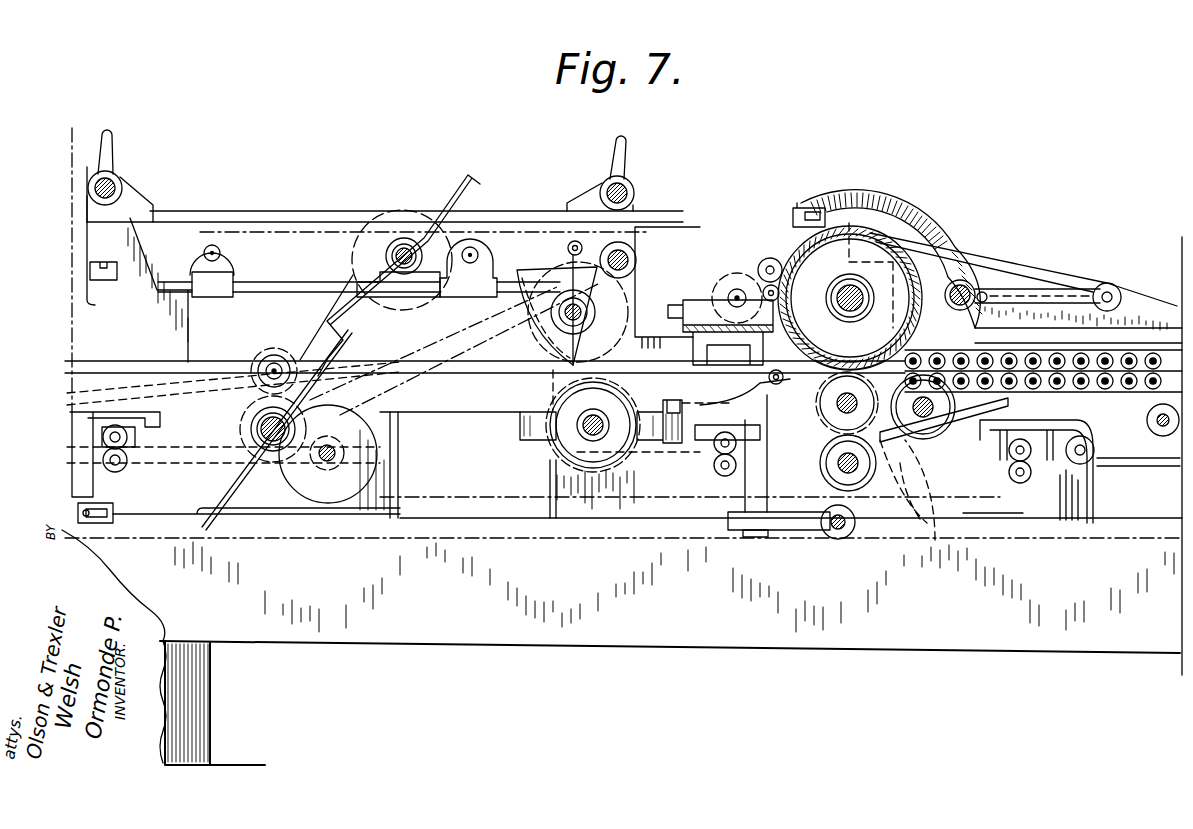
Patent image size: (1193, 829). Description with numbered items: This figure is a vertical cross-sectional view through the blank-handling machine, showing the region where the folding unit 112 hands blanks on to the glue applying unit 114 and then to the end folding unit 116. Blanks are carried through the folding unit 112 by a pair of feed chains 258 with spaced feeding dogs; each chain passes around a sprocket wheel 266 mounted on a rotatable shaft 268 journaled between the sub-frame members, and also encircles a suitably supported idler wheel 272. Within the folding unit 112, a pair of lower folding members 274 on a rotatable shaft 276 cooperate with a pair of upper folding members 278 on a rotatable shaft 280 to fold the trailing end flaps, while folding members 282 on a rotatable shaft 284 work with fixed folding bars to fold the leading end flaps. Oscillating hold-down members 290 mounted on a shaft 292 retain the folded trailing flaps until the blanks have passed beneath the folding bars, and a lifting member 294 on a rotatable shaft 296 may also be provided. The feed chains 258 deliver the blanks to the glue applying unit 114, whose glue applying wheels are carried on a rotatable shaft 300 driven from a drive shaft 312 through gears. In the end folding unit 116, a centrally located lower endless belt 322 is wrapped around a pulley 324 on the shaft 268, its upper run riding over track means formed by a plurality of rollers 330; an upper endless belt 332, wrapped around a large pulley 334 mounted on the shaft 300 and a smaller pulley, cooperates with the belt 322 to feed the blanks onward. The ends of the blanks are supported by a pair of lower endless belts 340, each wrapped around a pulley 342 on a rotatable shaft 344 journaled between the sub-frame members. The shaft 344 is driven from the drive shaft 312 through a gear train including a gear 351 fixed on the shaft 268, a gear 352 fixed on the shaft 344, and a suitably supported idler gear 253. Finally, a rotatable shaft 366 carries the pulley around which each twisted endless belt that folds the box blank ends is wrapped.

The folding unit 112 is at (257, 192).
The glue applying unit 114 is at (812, 192).
The end folding unit 116 is at (1106, 272).
The idler gear 253 is at (863, 298).
The feed chains 258 is at (641, 540).
The sprocket wheel 266 is at (768, 381).
The rotatable shaft 268 is at (845, 406).
The idler wheel 272 is at (835, 529).
The lower folding members 274 is at (218, 456).
The rotatable shaft 276 is at (250, 432).
The upper folding members 278 is at (421, 236).
The rotatable shaft 280 is at (404, 249).
The folding members 282 is at (582, 312).
The rotatable shaft 284 is at (608, 268).
The oscillating hold-down members 290 is at (531, 262).
The shaft 292 is at (648, 236).
The lifting member 294 is at (560, 451).
The rotatable shaft 296 is at (590, 425).
The rotatable shaft 300 is at (853, 297).
The drive shaft 312 is at (846, 538).
The lower endless belt 322 is at (930, 430).
The pulley 324 is at (750, 397).
The rollers 330 is at (1147, 434).
The upper endless belt 332 is at (993, 262).
The large pulley 334 is at (852, 222).
The lower endless belts 340 is at (957, 428).
The pulley 342 is at (957, 447).
The rotatable shaft 344 is at (872, 351).
The gear 351 is at (847, 403).
The gear 352 is at (926, 500).
The rotatable shaft 366 is at (862, 478).